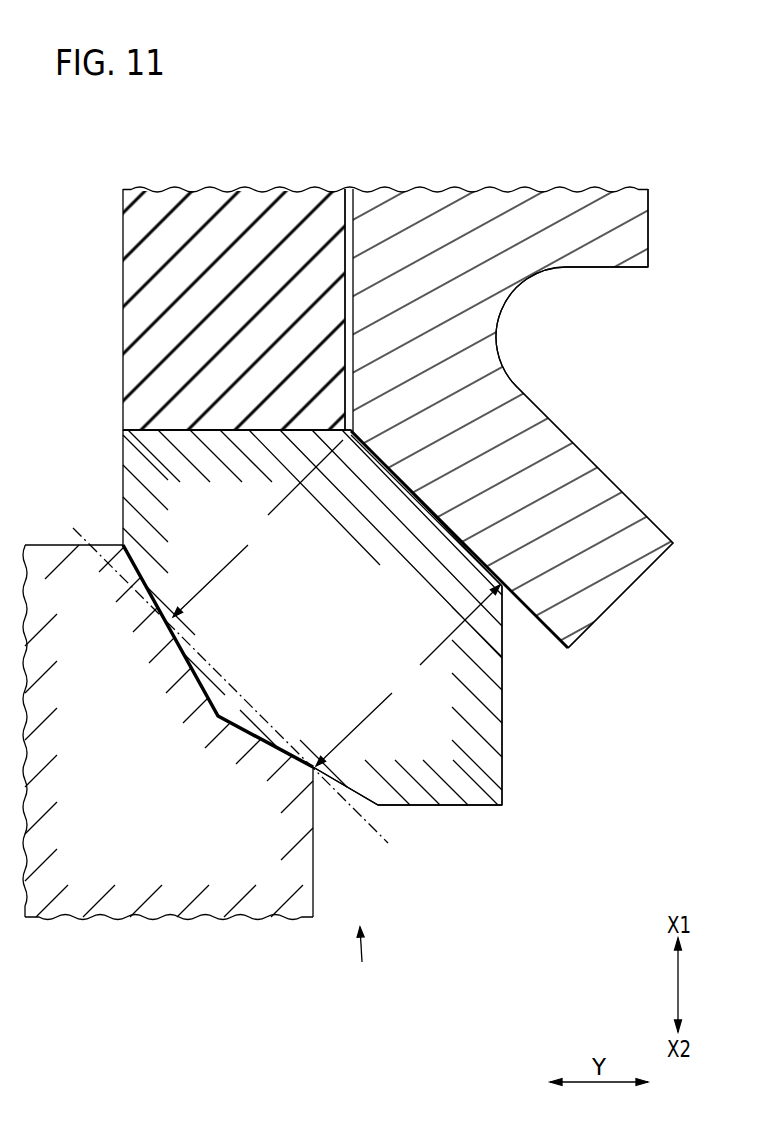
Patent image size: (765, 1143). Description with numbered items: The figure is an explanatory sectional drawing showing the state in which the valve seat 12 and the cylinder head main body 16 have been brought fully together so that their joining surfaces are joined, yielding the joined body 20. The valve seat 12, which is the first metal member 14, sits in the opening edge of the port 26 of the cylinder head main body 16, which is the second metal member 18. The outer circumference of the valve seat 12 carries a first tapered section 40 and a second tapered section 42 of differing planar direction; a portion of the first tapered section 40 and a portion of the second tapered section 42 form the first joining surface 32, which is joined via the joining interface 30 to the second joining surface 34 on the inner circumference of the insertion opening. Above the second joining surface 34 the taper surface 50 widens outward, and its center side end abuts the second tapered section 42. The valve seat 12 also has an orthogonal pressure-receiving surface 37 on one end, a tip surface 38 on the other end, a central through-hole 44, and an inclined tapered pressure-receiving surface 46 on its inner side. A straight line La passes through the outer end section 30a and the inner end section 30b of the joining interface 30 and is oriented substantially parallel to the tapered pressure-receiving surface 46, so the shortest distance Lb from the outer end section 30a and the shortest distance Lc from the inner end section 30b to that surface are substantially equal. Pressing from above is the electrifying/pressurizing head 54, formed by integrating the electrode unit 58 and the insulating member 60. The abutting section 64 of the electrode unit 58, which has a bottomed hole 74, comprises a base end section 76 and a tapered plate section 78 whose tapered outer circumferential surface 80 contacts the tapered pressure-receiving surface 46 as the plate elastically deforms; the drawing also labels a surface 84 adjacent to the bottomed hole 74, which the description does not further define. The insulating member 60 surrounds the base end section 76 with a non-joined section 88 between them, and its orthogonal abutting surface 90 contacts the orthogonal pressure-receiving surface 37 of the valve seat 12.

The valve seat 12 is at (339, 633).
The first metal member 14 is at (476, 767).
The cylinder head main body 16 is at (198, 757).
The second metal member 18 is at (117, 900).
The joined body 20 is at (365, 963).
The port 26 is at (317, 882).
The joining interface 30 is at (208, 702).
The outer end section 30a is at (170, 617).
The inner end section 30b is at (317, 772).
The first joining surface 32 is at (236, 727).
The second joining surface 34 is at (219, 708).
The orthogonal pressure-receiving surface 37 is at (175, 428).
The tip surface 38 is at (460, 807).
The first tapered section 40 is at (268, 745).
The second tapered section 42 is at (184, 650).
The through-hole 44 is at (503, 718).
The tapered pressure-receiving surface 46 is at (492, 500).
The taper surface 50 is at (143, 583).
The electrifying/pressurizing head 54 is at (520, 172).
The electrode unit 58 is at (537, 396).
The insulating member 60 is at (150, 207).
The abutting section 64 is at (673, 242).
The bottomed hole 74 is at (540, 287).
The base end section 76 is at (350, 268).
The tapered plate section 78 is at (640, 535).
The tapered outer circumferential surface 80 is at (406, 486).
The horizontal surface 84 is at (587, 268).
The non-joined section 88 is at (346, 243).
The orthogonal abutting surface 90 is at (152, 433).
The straight line La is at (243, 698).
The shortest distance Lb is at (258, 528).
The shortest distance Lc is at (408, 675).